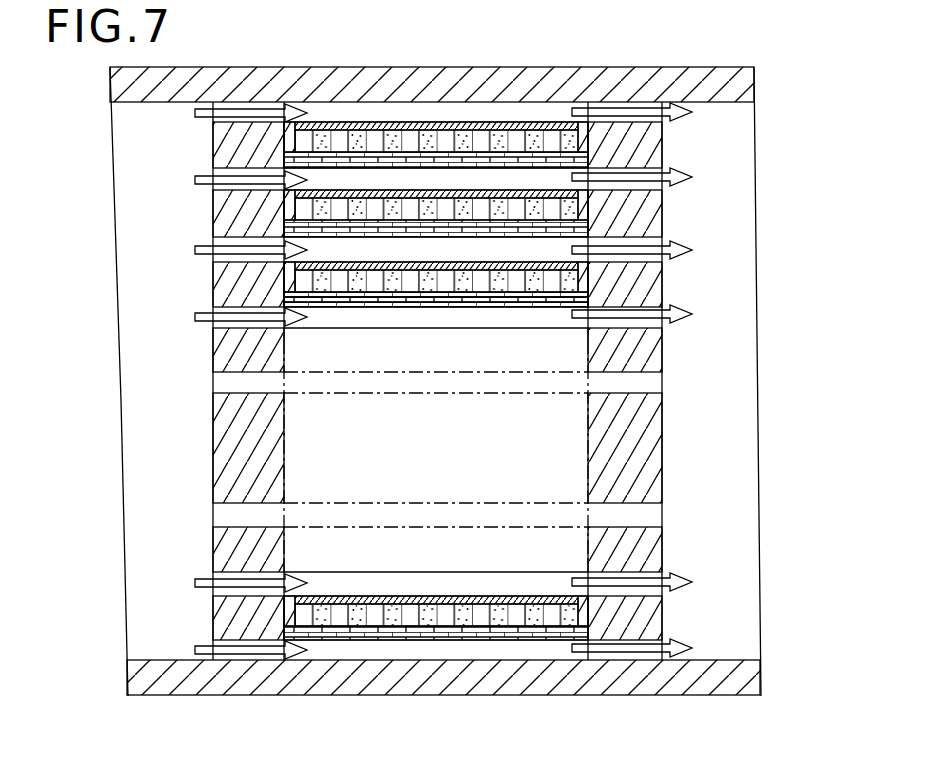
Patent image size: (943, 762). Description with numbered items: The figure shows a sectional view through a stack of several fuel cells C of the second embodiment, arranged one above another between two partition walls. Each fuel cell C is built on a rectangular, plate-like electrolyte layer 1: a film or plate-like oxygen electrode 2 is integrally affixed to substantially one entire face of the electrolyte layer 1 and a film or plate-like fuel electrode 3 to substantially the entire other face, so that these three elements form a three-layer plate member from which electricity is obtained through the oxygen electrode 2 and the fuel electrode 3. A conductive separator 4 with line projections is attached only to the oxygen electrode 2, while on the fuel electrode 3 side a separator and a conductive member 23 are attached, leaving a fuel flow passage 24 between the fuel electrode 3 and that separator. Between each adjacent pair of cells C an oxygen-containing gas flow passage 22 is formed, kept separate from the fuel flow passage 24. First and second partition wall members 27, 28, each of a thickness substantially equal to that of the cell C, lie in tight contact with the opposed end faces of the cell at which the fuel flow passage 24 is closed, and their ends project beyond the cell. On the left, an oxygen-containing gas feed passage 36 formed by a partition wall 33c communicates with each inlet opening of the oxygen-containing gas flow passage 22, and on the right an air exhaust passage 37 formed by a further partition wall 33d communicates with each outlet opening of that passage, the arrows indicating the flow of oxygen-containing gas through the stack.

The electrolyte layer 1 is at (547, 307).
The oxygen electrode 2 is at (532, 300).
The fuel electrode 3 is at (571, 285).
The conductive separator 4 is at (505, 308).
The oxygen-containing gas flow passage 22 is at (357, 247).
The conductive member 23 is at (413, 290).
The fuel flow passage 24 is at (467, 146).
The first partition wall member 27 is at (213, 207).
The second partition wall member 28 is at (663, 617).
The partition wall 33c is at (127, 476).
The partition wall 33d is at (752, 447).
The oxygen-containing gas feed passage 36 is at (193, 390).
The air exhaust passage 37 is at (745, 392).
The fuel cell C is at (418, 186).